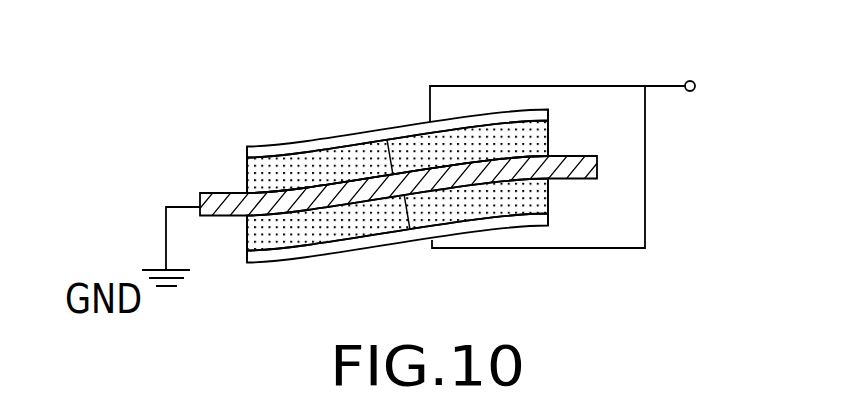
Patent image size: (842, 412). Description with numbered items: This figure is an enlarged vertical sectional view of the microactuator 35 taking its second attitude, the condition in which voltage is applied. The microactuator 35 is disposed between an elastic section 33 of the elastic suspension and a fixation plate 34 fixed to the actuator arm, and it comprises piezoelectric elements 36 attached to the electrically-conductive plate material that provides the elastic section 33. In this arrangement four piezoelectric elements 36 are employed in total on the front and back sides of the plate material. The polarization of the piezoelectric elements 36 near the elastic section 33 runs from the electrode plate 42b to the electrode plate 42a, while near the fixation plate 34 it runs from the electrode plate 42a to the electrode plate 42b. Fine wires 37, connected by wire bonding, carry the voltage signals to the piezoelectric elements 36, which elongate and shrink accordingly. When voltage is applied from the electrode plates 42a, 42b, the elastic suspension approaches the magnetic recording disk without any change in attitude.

The elastic section 33 is at (216, 192).
The fixation plate 34 is at (582, 157).
The microactuator 35 is at (332, 138).
The piezoelectric element 36 is at (245, 172).
The fine wire 37 is at (453, 86).
The electrode plate 42a is at (411, 241).
The electrode plate 42b is at (396, 127).